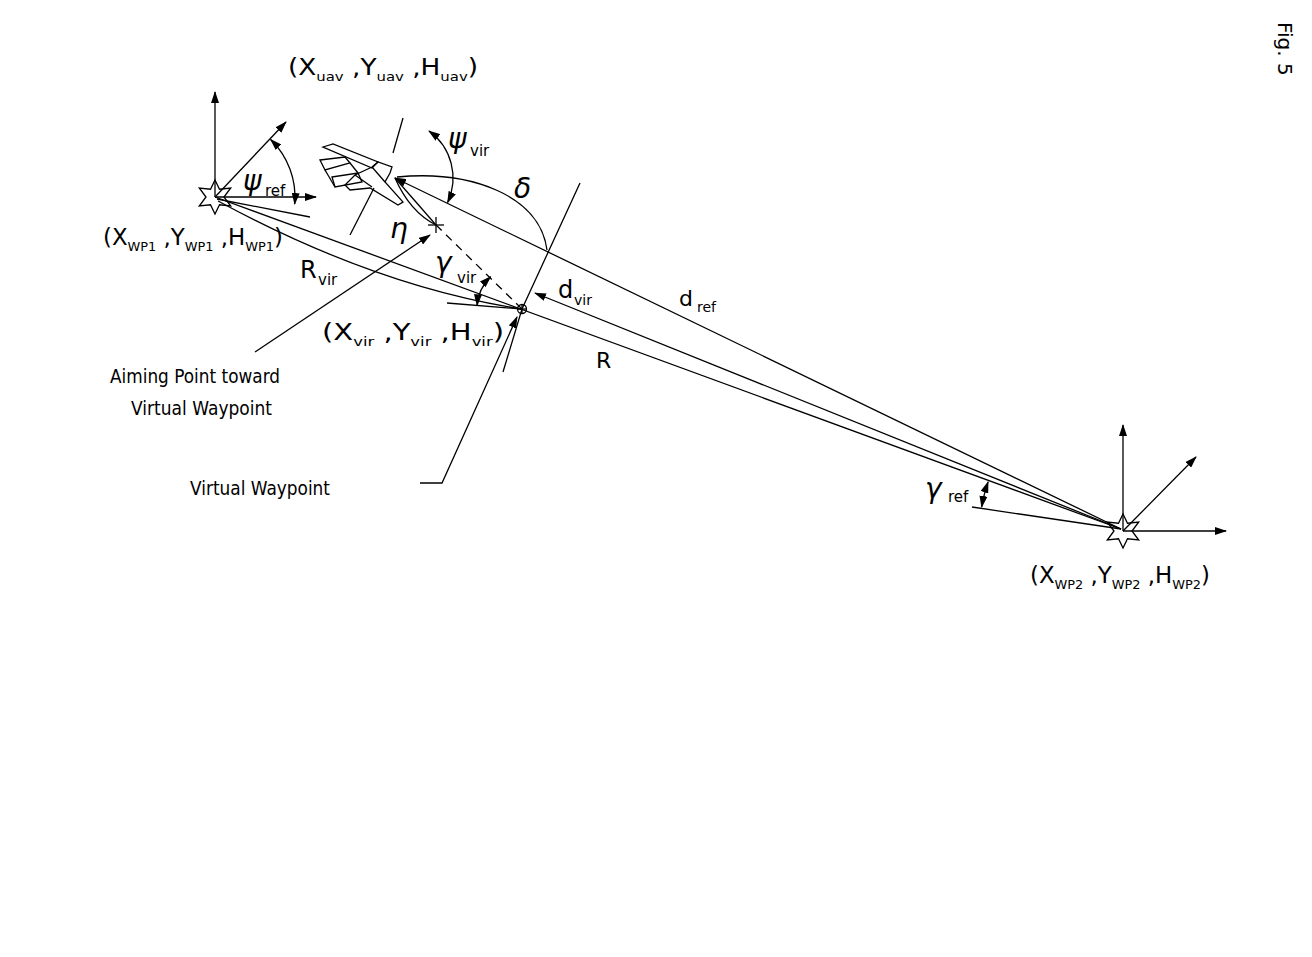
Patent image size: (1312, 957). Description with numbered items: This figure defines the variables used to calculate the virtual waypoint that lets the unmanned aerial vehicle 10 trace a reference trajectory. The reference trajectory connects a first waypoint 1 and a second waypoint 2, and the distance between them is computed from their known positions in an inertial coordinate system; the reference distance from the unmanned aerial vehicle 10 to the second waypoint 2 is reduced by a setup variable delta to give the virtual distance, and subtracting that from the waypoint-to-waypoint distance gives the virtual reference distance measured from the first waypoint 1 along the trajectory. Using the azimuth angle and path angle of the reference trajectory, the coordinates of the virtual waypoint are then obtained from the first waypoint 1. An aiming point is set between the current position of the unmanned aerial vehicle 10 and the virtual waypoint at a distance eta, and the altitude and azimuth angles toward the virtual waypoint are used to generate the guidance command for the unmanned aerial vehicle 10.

The unmanned aerial vehicle 10 is at (390, 154).
The first waypoint WP1 1 is at (236, 138).
The second waypoint WP2 2 is at (1147, 473).